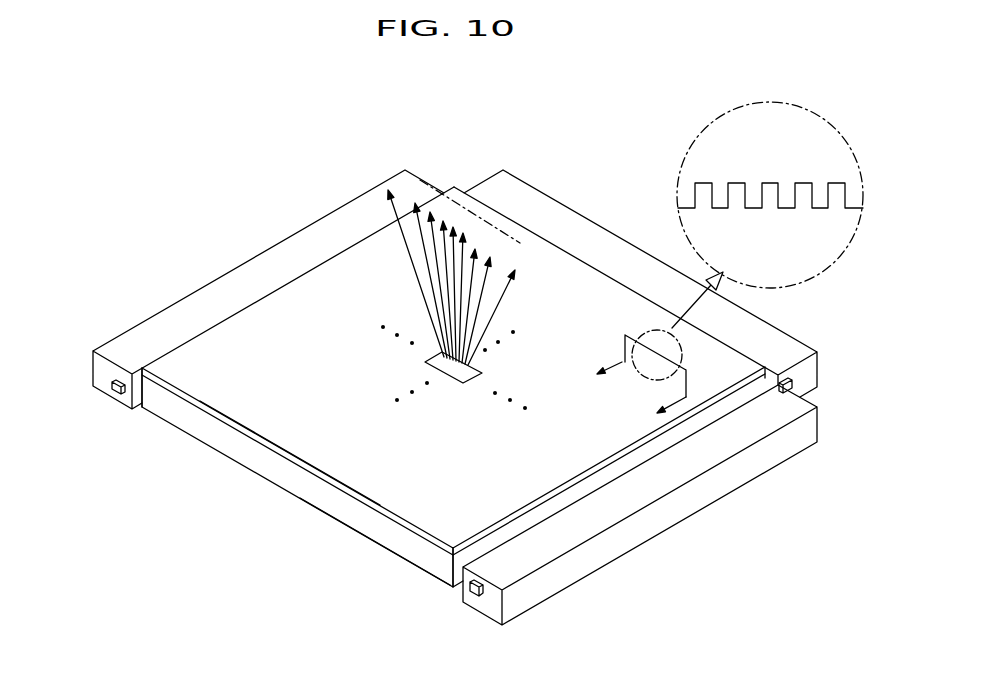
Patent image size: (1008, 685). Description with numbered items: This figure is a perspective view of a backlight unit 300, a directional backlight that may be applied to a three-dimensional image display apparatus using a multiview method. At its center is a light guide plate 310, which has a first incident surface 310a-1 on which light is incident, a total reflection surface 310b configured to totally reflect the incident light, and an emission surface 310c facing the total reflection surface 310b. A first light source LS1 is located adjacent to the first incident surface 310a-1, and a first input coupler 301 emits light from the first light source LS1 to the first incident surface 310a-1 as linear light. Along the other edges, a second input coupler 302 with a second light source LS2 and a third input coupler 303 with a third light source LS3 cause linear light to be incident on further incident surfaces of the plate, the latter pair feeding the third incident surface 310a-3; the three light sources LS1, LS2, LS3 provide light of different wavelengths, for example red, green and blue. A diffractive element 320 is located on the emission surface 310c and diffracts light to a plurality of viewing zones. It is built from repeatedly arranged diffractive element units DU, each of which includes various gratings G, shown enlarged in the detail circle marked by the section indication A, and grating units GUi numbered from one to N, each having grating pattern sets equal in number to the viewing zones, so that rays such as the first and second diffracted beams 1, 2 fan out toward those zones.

The backlight unit 300 is at (186, 170).
The first input coupler 301 is at (260, 255).
The second input coupler 302 is at (560, 204).
The third input coupler 303 is at (675, 520).
The light guide plate 310 is at (297, 487).
The first incident surface 310a-1 is at (128, 409).
The third incident surface 310a-3 is at (458, 575).
The total reflection surface 310b is at (382, 548).
The emission surface 310c is at (347, 498).
The diffractive element 320 is at (262, 441).
The first light source LS1 is at (110, 386).
The second light source LS2 is at (796, 388).
The third light source LS3 is at (480, 600).
The diffractive element unit DU is at (450, 395).
The grating unit GUi is at (480, 375).
The grating G is at (739, 182).
The number of grating units N is at (479, 221).
The first light beam 1 is at (411, 257).
The second light beam 2 is at (460, 270).
The section line A- A is at (628, 384).